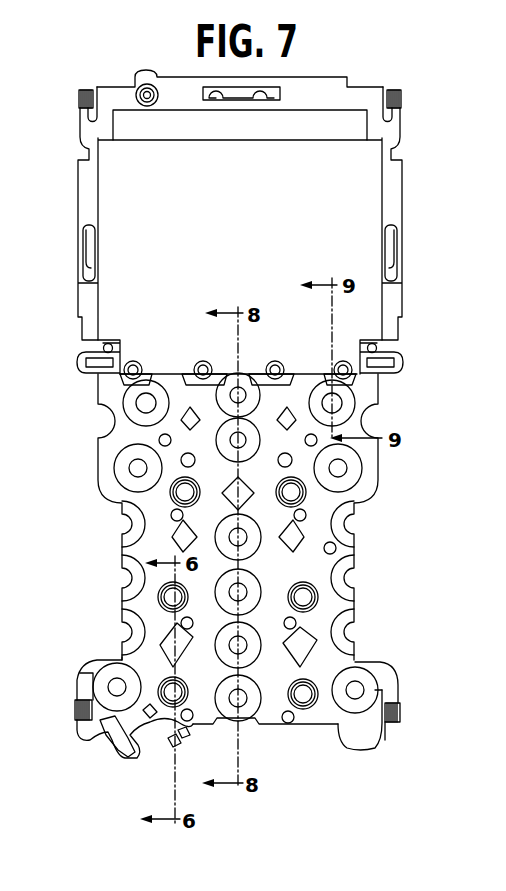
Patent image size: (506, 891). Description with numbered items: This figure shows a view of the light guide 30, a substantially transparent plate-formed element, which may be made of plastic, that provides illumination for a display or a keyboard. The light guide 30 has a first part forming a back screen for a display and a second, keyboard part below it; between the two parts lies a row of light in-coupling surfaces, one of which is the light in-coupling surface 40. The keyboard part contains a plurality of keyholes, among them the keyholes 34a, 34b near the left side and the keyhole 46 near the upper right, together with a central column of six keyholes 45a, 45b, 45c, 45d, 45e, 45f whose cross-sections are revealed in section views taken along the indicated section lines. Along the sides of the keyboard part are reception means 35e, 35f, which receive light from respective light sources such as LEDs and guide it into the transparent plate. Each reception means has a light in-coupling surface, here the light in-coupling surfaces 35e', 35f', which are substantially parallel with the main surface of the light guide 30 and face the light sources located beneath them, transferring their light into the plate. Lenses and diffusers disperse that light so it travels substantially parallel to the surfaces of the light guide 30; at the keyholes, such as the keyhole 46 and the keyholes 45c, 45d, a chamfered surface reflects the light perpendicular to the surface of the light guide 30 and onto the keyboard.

The light guide 30 is at (419, 274).
The light in-coupling surface 40 is at (353, 386).
The keyhole 46 is at (337, 402).
The keyhole 34a is at (133, 470).
The keyhole 34b is at (117, 687).
The reception means 35e is at (120, 576).
The light in-coupling surface 35e' is at (117, 599).
The reception means 35f is at (116, 667).
The light in-coupling surface 35f' is at (140, 744).
The keyhole 45a is at (232, 392).
The keyhole 45b is at (247, 447).
The keyhole 45c is at (247, 538).
The keyhole 45d is at (247, 590).
The keyhole 45e is at (247, 640).
The keyhole 45f is at (243, 705).